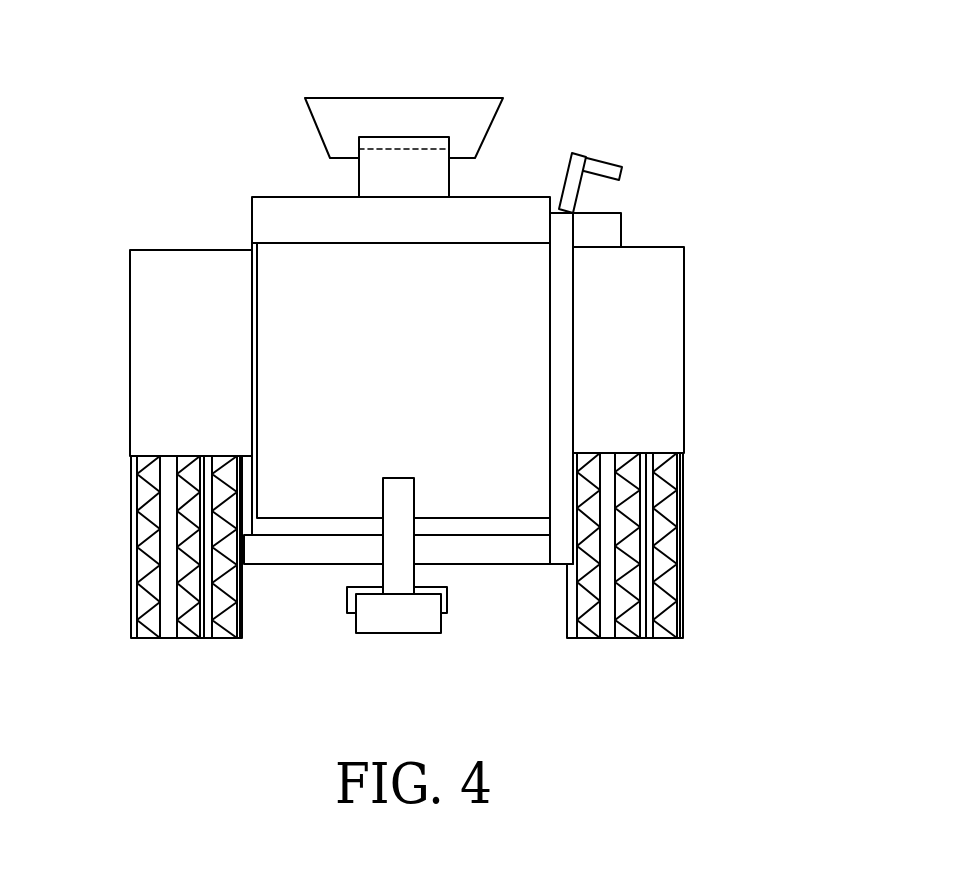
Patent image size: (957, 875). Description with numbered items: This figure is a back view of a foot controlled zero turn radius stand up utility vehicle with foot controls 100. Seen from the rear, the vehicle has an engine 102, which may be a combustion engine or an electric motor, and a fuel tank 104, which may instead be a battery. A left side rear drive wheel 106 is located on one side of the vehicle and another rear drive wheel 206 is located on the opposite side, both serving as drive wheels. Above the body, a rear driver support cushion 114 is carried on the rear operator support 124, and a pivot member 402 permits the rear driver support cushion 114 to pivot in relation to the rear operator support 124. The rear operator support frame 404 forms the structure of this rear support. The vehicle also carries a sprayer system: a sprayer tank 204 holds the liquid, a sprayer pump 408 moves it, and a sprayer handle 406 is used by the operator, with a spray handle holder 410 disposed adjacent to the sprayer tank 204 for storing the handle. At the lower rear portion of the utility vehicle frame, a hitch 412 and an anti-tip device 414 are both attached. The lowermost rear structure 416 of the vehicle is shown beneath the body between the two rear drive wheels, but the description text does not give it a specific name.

The stand up zero turn utility vehicle with foot controls 100 is at (163, 69).
The engine 102 is at (401, 389).
The fuel tank 104 is at (153, 327).
The left side rear drive wheel 106 is at (148, 547).
The rear driver support cushion 114 is at (434, 94).
The rear operator support 124 is at (321, 165).
The sprayer tank 204 is at (659, 317).
The rear drive wheel 206 is at (655, 545).
The pivot member 402 is at (404, 167).
The rear operator support frame 404 is at (401, 186).
The sprayer handle 406 is at (609, 152).
The sprayer pump 408 is at (627, 199).
The spray handle holder 410 is at (592, 388).
The hitch 412 is at (429, 503).
The anti-tip device 414 is at (427, 602).
The bottom plate 416 is at (408, 579).